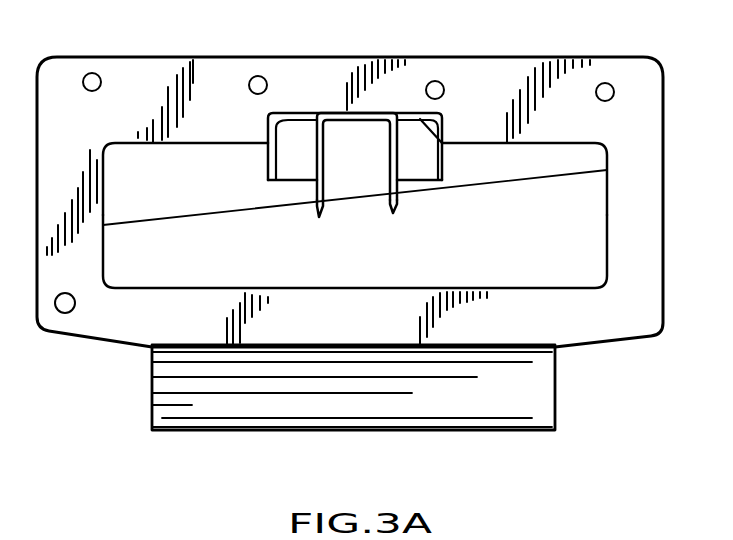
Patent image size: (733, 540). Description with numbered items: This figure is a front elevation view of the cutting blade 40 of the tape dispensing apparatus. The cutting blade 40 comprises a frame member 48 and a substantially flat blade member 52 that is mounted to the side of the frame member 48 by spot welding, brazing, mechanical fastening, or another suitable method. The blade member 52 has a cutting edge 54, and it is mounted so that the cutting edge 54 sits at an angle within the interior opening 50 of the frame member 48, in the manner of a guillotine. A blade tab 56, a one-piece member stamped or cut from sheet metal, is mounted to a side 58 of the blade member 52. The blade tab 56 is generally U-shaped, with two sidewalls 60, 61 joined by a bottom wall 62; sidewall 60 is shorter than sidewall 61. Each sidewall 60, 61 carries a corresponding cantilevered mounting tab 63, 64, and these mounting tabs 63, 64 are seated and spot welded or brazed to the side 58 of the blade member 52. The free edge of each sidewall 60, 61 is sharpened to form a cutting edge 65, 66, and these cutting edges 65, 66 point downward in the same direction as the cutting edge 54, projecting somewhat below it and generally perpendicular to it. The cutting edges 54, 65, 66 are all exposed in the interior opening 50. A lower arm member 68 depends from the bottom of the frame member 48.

The cutting blade 40 is at (610, 57).
The frame member 48 is at (637, 255).
The interior opening 50 is at (587, 217).
The blade member 52 is at (146, 189).
The cutting edge 54 is at (521, 176).
The blade tab 56 is at (368, 113).
The side 58 is at (493, 150).
The sidewall 60 is at (400, 143).
The sidewall 61 is at (310, 137).
The bottom wall 62 is at (337, 113).
The mounting tab 63 is at (427, 153).
The mounting tab 64 is at (281, 157).
The cutting edge 65 is at (392, 218).
The cutting edge 66 is at (317, 220).
The lower arm member 68 is at (527, 395).